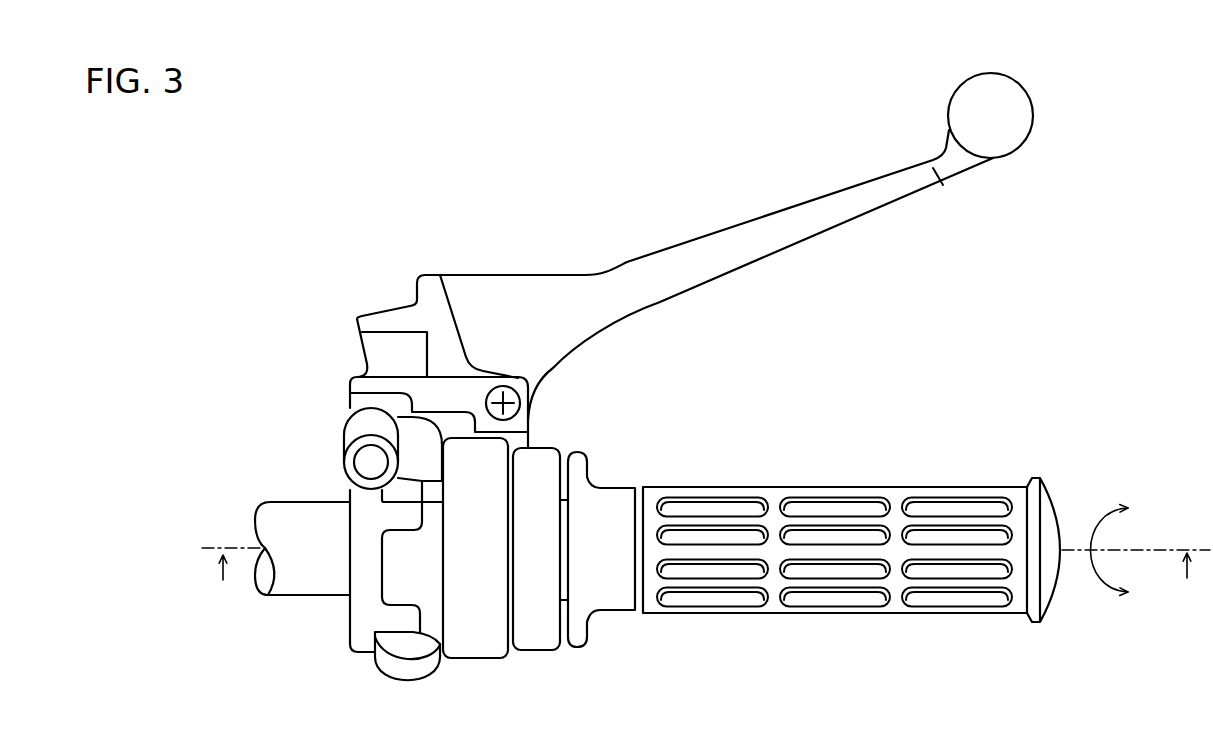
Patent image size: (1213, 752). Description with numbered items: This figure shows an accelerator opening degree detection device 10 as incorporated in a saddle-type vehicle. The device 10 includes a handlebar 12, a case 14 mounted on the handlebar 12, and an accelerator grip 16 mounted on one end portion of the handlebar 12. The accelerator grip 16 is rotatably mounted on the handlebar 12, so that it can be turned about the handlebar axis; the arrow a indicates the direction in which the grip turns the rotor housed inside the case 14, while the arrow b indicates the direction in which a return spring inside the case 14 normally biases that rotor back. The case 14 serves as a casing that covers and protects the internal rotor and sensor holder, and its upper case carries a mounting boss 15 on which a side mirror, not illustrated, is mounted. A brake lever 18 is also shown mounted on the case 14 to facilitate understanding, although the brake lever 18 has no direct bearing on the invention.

The accelerator opening degree detection device 10 is at (629, 430).
The handlebar 12 is at (296, 507).
The case 14 is at (482, 658).
The mounting boss 15 is at (348, 434).
The accelerator grip 16 is at (860, 476).
The brake lever 18 is at (782, 228).